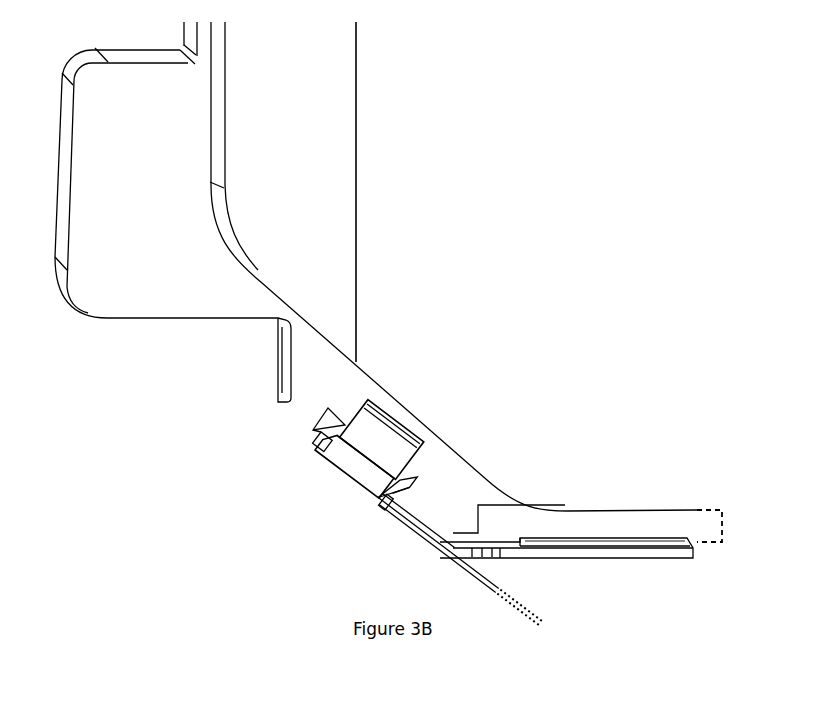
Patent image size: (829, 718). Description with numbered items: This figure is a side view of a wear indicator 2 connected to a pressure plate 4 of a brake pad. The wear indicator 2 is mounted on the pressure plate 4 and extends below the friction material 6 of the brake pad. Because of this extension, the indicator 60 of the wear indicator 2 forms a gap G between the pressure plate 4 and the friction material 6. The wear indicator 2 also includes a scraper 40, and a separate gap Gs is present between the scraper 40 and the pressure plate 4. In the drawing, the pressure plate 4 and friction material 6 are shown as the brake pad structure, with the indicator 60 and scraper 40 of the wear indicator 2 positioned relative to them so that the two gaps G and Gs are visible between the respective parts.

The wear indicator 2 is at (289, 506).
The pressure plate 4 is at (312, 389).
The friction material 6 is at (395, 313).
The scraper 40 is at (387, 556).
The indicator 60 is at (648, 576).
The gap G is at (723, 527).
The gap Gs is at (540, 632).